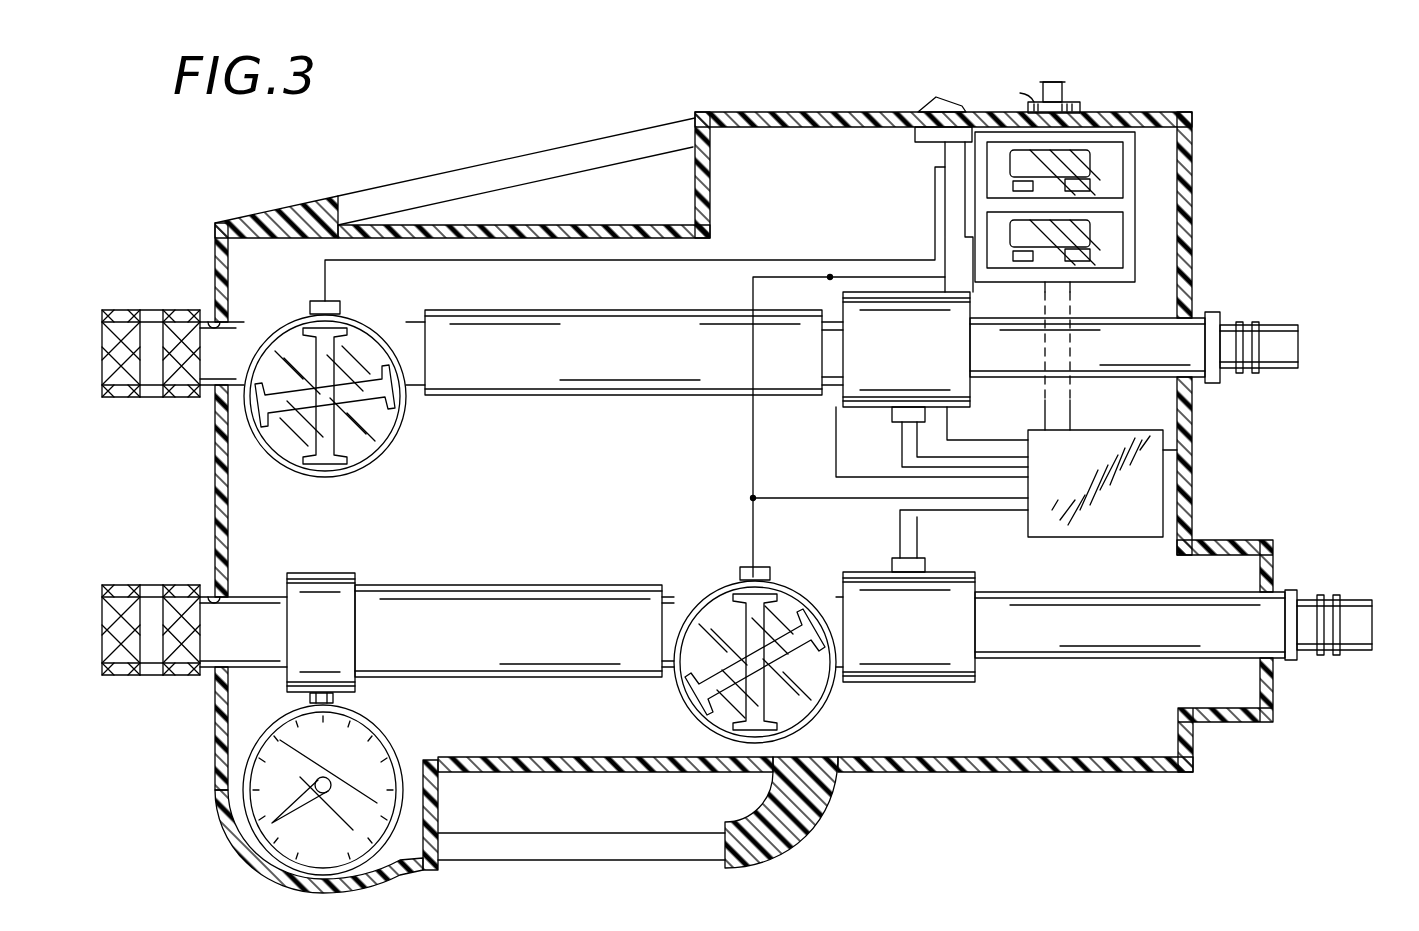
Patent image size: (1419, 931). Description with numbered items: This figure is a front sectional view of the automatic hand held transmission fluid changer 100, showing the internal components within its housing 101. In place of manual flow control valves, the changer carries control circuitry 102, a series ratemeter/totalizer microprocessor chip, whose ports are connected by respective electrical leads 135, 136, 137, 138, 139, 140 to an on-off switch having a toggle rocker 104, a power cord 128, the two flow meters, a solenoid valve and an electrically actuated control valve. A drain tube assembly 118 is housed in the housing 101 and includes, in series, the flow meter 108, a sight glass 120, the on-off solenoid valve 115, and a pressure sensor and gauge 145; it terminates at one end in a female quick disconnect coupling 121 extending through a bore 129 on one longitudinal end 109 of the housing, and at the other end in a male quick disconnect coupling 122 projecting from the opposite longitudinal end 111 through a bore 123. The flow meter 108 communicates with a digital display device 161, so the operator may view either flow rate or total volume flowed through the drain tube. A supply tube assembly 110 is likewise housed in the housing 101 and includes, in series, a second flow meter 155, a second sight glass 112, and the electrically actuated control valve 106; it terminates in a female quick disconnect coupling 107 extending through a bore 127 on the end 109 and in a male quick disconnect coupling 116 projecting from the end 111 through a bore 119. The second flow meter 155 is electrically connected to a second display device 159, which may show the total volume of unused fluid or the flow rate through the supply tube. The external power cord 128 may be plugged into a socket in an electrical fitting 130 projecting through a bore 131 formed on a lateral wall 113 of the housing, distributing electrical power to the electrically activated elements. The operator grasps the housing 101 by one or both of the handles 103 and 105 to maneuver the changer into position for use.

The automatic hand held transmission fluid changer 100 is at (813, 92).
The housing 101 is at (706, 467).
The control circuitry 102 is at (1186, 450).
The handle 103 is at (536, 170).
The toggle rocker 104 is at (946, 105).
The handle 105 is at (614, 862).
The electrically actuated control valve 106 is at (970, 300).
The female quick disconnect coupling 107 is at (114, 310).
The flow meter 108 is at (800, 590).
The longitudinal end 109 is at (214, 468).
The supply tube assembly 110 is at (400, 316).
The opposite longitudinal end 111 is at (1192, 484).
The second sight glass 112 is at (586, 320).
The lateral wall 113 is at (840, 118).
The on-off solenoid valve 115 is at (944, 686).
The male quick disconnect coupling 116 is at (1293, 326).
The drain tube assembly 118 is at (1103, 662).
The bore 119 is at (1196, 322).
The sight glass 120 is at (598, 585).
The female quick disconnect coupling 121 is at (122, 676).
The male quick disconnect coupling 122 is at (1362, 600).
The bore 123 is at (1285, 656).
The bore 127 is at (212, 320).
The power cord 128 is at (1064, 77).
The bore 129 is at (212, 595).
The electrical fitting 130 is at (1080, 106).
The bore 131 is at (1022, 93).
The electrical lead 135 is at (947, 420).
The electrical lead 136 is at (902, 437).
The electrical lead 137 is at (834, 442).
The electrical lead 138 is at (830, 500).
The electrical lead 139 is at (952, 514).
The electrical lead 140 is at (1072, 394).
The pressure sensor and gauge 145 is at (360, 702).
The second flow meter 155 is at (294, 318).
The second display device 159 is at (1120, 168).
The digital display device 161 is at (1110, 232).